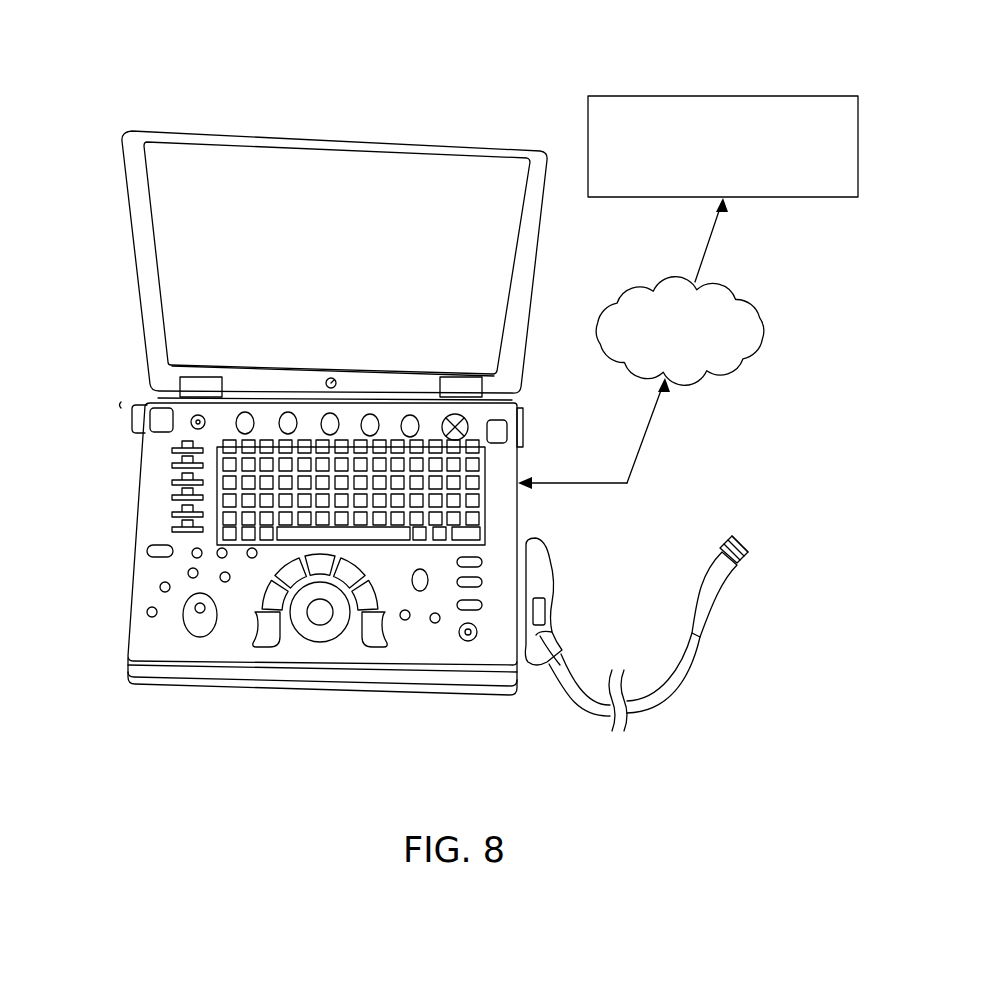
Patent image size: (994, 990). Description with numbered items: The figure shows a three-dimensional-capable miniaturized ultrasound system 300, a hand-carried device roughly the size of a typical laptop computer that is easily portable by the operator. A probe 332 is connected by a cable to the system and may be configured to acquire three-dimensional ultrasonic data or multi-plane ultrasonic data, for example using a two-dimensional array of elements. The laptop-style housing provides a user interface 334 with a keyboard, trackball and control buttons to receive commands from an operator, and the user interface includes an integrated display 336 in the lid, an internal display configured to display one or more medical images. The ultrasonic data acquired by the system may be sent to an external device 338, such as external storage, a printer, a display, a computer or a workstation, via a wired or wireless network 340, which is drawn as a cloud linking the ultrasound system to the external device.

The miniaturized ultrasound system 300 is at (214, 56).
The probe 332 is at (641, 736).
The user interface 334 is at (126, 400).
The integrated display 336 is at (104, 133).
The external device 338 is at (725, 96).
The network 340 is at (770, 312).